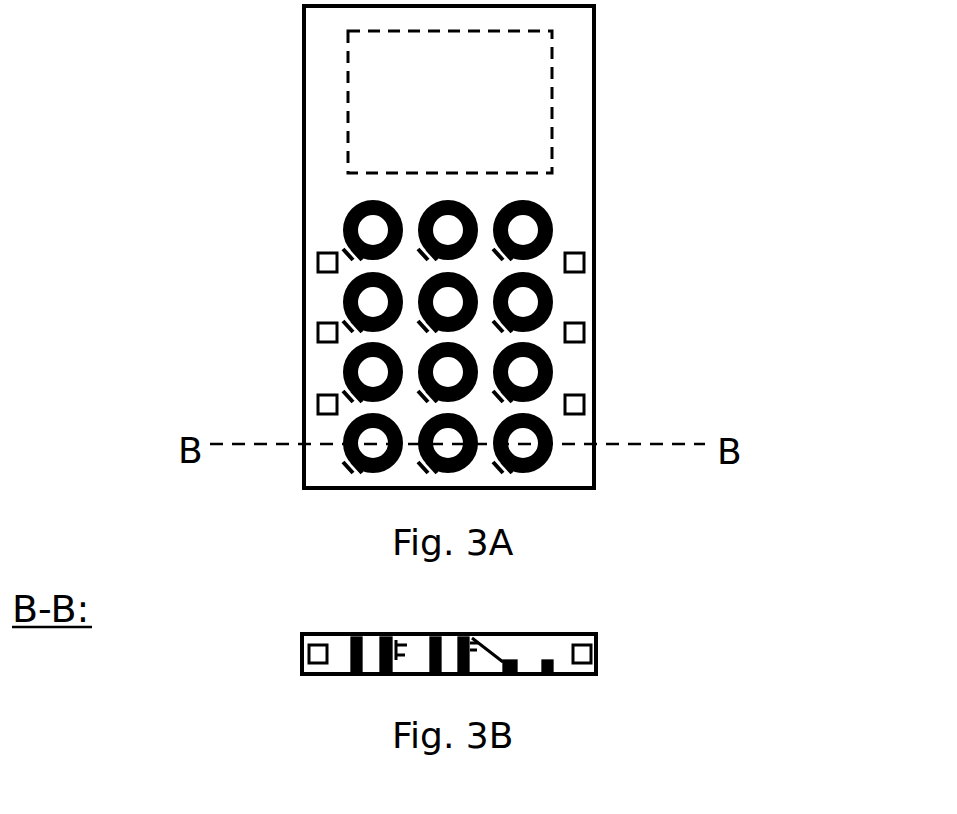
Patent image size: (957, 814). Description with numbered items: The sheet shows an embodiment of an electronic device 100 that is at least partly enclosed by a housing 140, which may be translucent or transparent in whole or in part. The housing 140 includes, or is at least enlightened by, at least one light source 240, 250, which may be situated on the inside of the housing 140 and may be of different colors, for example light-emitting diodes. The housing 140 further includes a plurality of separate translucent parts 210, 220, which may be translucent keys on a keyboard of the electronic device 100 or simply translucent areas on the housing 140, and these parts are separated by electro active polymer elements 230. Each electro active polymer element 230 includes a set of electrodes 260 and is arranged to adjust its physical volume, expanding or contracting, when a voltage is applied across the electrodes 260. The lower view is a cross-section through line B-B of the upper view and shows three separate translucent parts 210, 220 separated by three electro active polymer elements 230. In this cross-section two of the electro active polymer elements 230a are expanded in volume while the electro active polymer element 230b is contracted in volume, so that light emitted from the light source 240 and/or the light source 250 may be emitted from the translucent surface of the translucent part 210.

In FIG. 3A, the electronic device 100 is at (677, 33).
In FIG. 3A, the housing 140 is at (320, 116).
In FIG. 3A, the translucent part 210 is at (535, 440).
In FIG. 3A, the translucent part 220 is at (348, 442).
In FIG. 3A, the electro active polymer element 230 is at (537, 468).
In FIG. 3B, the electro active polymer element 230a is at (462, 673).
In FIG. 3B, the electro active polymer element 230b is at (515, 673).
In FIG. 3A, the light source 240 is at (319, 262).
In FIG. 3B, the light source 240 is at (310, 650).
In FIG. 3A, the light source 250 is at (580, 262).
In FIG. 3B, the light source 250 is at (592, 650).
In FIG. 3A, the electrodes 260 is at (500, 460).